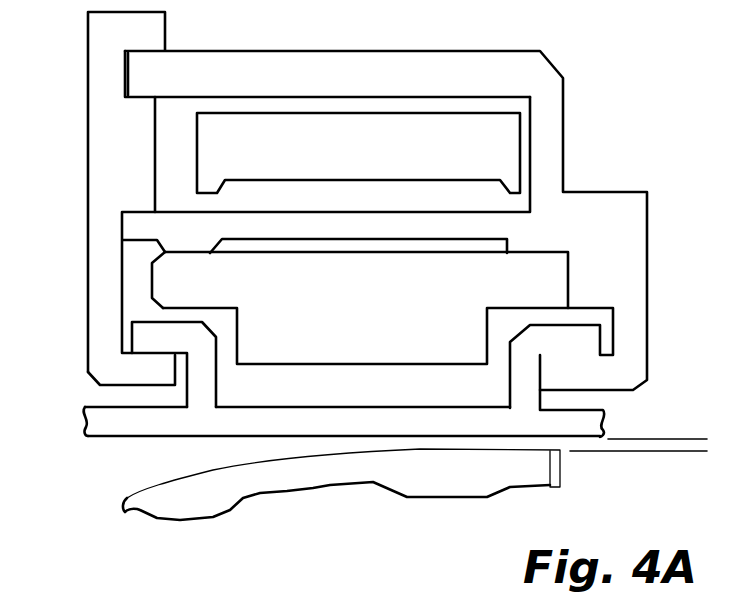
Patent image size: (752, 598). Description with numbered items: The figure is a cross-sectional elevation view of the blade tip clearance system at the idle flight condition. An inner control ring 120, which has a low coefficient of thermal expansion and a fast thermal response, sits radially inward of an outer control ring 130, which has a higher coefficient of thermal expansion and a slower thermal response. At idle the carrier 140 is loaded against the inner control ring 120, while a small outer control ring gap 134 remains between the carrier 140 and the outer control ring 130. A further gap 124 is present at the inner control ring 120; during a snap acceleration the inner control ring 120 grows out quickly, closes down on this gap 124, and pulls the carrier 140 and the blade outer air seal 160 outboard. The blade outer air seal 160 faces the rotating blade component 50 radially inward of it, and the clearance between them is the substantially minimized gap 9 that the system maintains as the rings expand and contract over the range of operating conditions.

The carrier 140 is at (547, 123).
The outer control ring gap 134 is at (217, 108).
The outer control ring 130 is at (302, 138).
The inner control ring 120 is at (165, 287).
The gap 124 is at (147, 257).
The blade outer air seal 160 is at (112, 418).
The rotating blade component 50 is at (290, 478).
The gap 9 is at (687, 405).